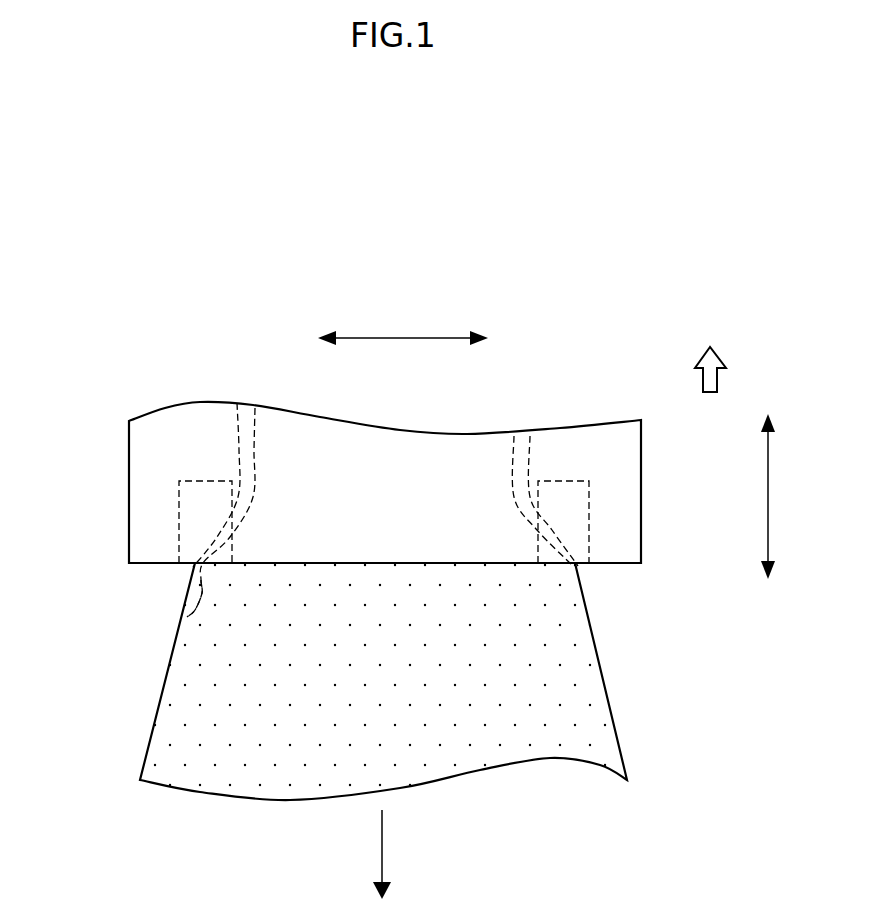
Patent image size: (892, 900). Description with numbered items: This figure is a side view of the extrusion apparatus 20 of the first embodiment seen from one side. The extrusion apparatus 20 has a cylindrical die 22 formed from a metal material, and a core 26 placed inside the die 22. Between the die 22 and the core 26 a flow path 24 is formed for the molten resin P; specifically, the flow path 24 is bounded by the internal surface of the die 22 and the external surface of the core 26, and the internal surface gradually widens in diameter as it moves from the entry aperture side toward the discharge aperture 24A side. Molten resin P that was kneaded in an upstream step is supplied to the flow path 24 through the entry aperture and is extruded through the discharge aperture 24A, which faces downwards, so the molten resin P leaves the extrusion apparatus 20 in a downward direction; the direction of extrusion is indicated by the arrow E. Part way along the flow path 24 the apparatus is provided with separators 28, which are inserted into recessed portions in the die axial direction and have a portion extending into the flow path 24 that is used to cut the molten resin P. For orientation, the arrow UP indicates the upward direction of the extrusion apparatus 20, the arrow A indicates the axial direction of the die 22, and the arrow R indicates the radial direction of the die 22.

The extrusion apparatus 20 is at (119, 322).
The die 22 is at (644, 481).
The flow path 24 is at (245, 415).
The discharge aperture 24A is at (188, 617).
The core 26 is at (527, 464).
The separators 28 is at (177, 530).
The molten resin P is at (621, 710).
The arrow R is at (404, 337).
The arrow A is at (768, 497).
The arrow UP is at (714, 348).
The arrow E is at (383, 850).